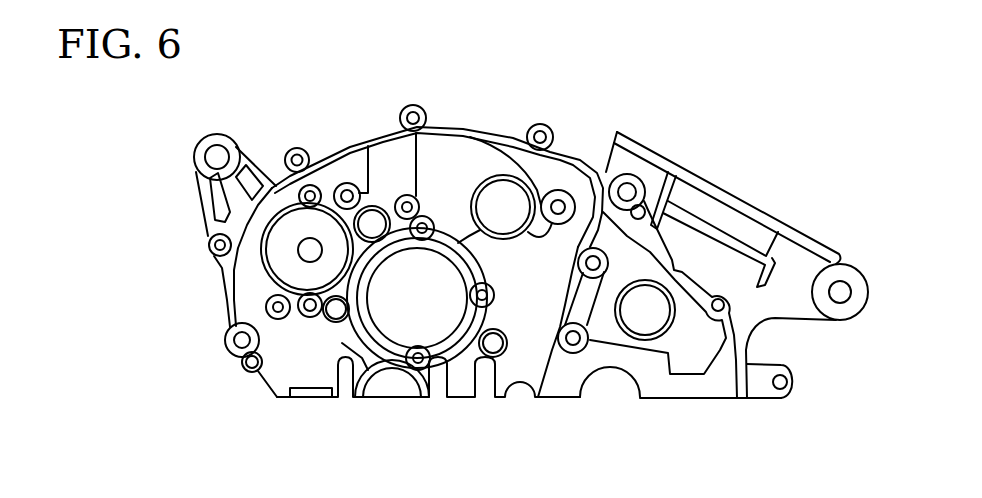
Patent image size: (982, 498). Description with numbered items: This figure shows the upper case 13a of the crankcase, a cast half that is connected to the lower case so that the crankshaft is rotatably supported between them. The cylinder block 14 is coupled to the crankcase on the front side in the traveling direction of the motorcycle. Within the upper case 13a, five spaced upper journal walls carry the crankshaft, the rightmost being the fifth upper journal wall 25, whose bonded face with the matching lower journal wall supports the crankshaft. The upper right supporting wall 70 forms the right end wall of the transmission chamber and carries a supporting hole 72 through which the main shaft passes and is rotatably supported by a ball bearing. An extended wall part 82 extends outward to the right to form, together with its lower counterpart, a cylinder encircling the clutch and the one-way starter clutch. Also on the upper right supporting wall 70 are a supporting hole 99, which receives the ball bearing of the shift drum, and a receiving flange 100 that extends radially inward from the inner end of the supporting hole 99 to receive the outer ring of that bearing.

The upper case 13a is at (565, 176).
The cylinder block 14 is at (790, 310).
The fifth upper journal wall 25 is at (655, 400).
The upper right supporting wall 70 is at (283, 360).
The supporting hole 72 is at (393, 330).
The extended wall part 82 is at (459, 131).
The supporting hole 99 is at (270, 266).
The receiving flange 100 is at (320, 262).